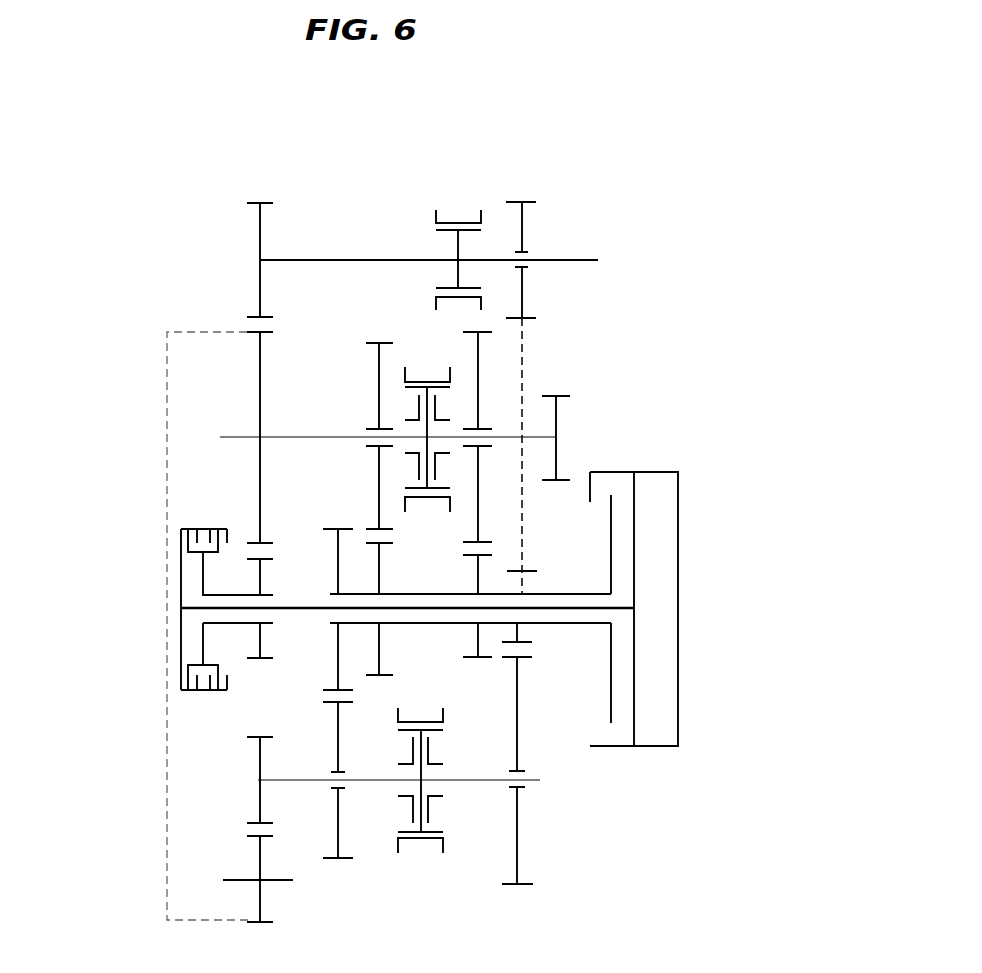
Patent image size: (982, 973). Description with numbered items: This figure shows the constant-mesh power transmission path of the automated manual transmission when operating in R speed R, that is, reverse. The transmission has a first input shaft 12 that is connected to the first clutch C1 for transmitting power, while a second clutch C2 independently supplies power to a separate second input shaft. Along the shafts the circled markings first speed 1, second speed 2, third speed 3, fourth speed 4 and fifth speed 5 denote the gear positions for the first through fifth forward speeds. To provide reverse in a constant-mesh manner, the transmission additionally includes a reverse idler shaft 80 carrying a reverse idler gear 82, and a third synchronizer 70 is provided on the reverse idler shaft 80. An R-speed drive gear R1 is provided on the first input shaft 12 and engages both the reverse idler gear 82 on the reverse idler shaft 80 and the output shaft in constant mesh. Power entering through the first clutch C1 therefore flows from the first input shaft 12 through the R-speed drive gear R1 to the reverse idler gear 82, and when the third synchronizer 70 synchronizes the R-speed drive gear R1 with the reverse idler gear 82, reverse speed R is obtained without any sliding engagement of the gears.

The reverse idler shaft 80 is at (305, 258).
The third synchronizer 70 is at (430, 219).
The reverse idler gear 82 is at (523, 227).
The first input shaft 12 is at (553, 595).
The R speed R is at (516, 430).
The R-speed drive gear R1 is at (517, 625).
The first clutch C1 is at (686, 620).
The second clutch C2 is at (151, 609).
The first speed 1 is at (477, 656).
The second speed 2 is at (269, 554).
The third speed 3 is at (378, 667).
The fourth speed 4 is at (463, 554).
The fifth speed 5 is at (393, 554).